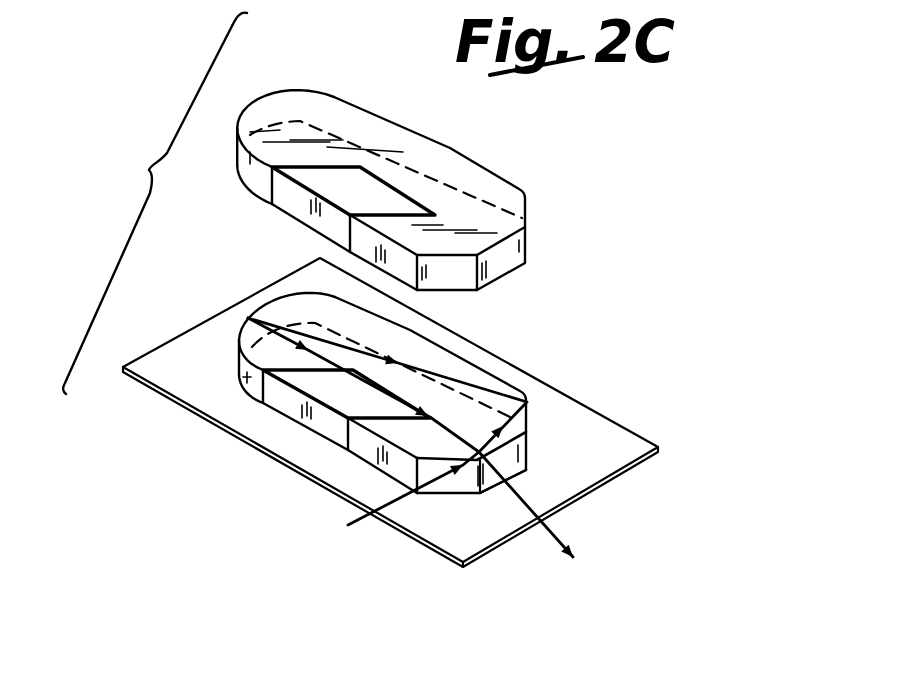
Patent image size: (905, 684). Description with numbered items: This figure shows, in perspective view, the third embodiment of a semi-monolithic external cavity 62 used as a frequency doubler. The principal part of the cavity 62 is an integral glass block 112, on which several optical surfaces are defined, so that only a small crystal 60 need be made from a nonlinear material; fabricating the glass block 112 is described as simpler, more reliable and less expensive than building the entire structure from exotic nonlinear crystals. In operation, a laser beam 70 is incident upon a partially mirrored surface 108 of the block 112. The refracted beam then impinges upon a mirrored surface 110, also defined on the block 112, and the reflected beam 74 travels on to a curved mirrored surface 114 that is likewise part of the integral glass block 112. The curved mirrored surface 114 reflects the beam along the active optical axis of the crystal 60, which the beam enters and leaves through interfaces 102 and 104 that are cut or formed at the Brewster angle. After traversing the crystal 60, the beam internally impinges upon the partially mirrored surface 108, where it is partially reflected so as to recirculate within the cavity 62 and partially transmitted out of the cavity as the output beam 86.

The semi-monolithic cavity 62 is at (630, 190).
The mirrored surface 110 is at (572, 432).
The curved mirrored surface 114 is at (284, 296).
The reflected beam 74 is at (520, 386).
The interface 102 is at (243, 377).
The integral glass block 112 is at (463, 336).
The interface 104 is at (293, 455).
The crystal 60 is at (287, 405).
The laser beam 70 is at (472, 465).
The partially mirrored surface 108 is at (477, 460).
The output beam 86 is at (527, 469).